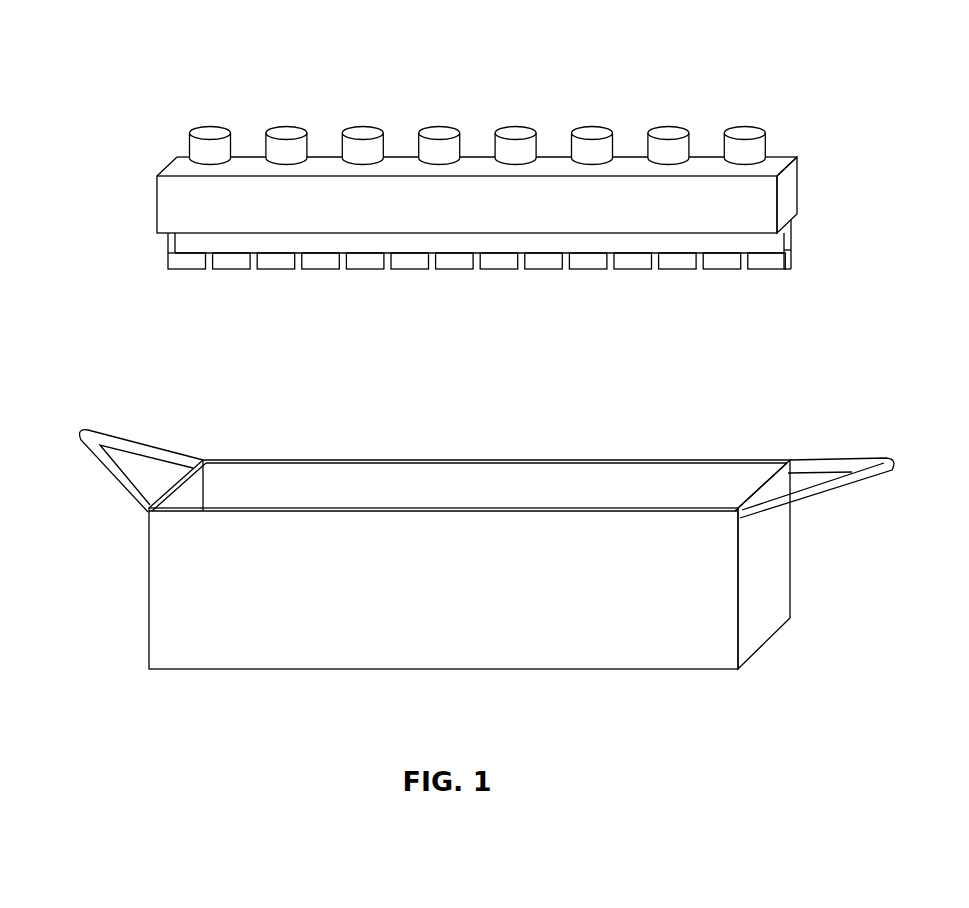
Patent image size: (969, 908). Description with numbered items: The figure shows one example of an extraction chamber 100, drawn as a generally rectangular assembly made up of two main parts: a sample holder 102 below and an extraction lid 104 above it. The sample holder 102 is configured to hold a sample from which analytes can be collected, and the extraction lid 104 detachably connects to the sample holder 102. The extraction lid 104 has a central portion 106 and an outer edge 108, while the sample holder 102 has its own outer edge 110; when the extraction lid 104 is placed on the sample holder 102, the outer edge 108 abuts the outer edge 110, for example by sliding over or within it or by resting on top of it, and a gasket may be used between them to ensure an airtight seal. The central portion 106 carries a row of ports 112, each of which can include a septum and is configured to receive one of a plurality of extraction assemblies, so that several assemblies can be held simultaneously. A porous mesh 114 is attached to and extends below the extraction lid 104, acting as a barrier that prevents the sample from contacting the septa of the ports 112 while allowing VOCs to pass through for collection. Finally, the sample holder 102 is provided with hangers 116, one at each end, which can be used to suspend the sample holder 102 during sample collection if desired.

The extraction chamber 100 is at (131, 33).
The sample holder 102 is at (777, 563).
The extraction lid 104 is at (787, 196).
The central portion 106 is at (780, 160).
The outer edge 108 is at (162, 237).
The outer edge 110 is at (295, 459).
The ports 112 is at (177, 93).
The porous mesh 114 is at (722, 262).
The hangers 116 is at (125, 445).